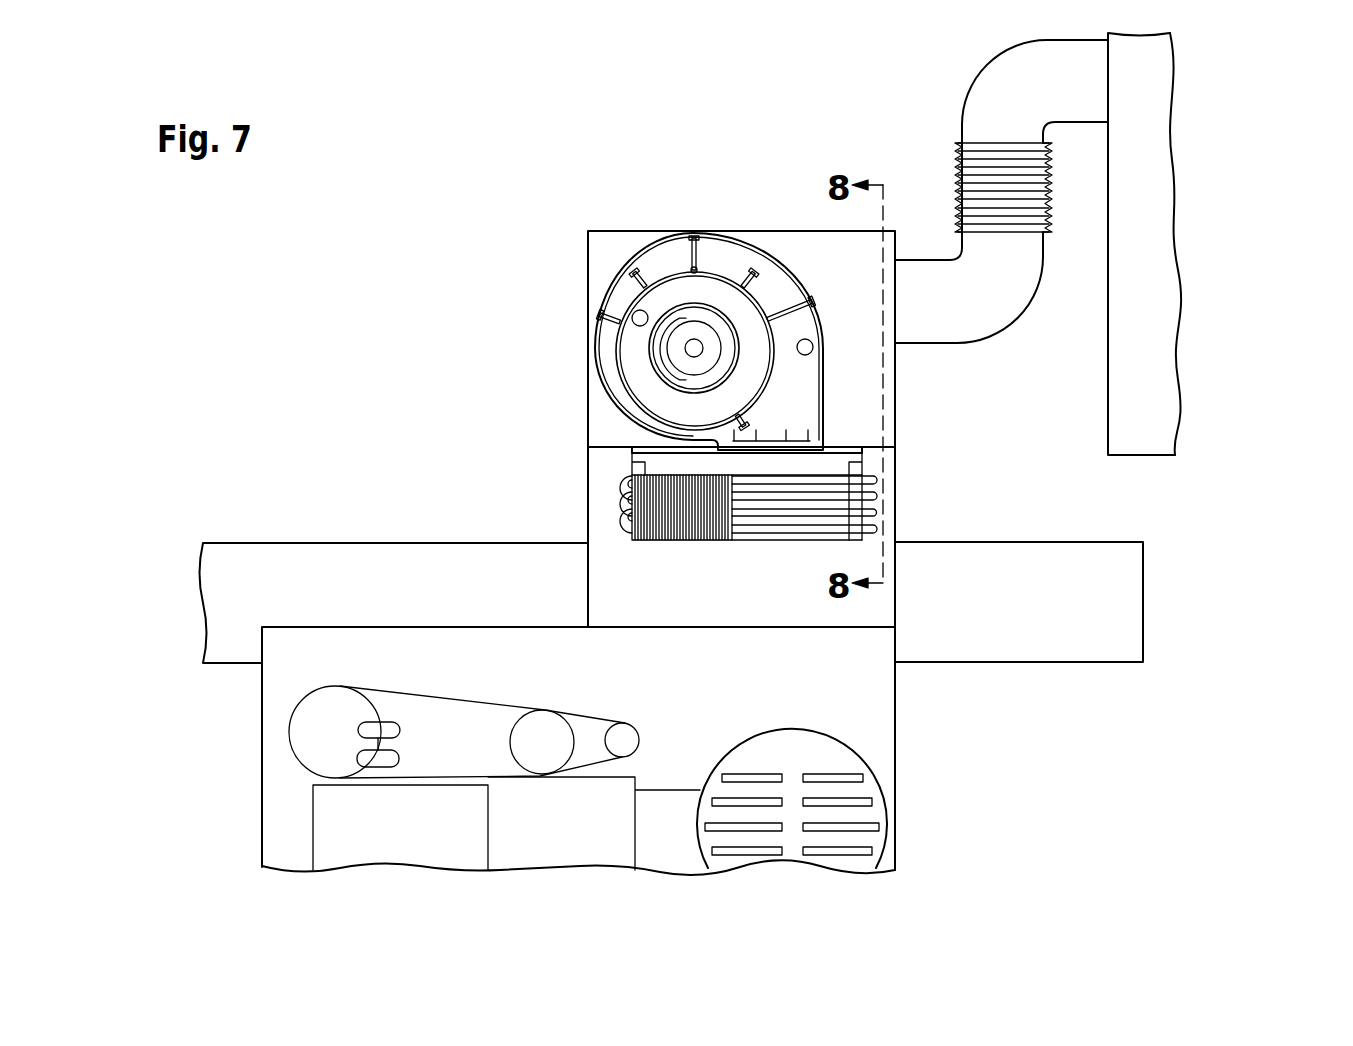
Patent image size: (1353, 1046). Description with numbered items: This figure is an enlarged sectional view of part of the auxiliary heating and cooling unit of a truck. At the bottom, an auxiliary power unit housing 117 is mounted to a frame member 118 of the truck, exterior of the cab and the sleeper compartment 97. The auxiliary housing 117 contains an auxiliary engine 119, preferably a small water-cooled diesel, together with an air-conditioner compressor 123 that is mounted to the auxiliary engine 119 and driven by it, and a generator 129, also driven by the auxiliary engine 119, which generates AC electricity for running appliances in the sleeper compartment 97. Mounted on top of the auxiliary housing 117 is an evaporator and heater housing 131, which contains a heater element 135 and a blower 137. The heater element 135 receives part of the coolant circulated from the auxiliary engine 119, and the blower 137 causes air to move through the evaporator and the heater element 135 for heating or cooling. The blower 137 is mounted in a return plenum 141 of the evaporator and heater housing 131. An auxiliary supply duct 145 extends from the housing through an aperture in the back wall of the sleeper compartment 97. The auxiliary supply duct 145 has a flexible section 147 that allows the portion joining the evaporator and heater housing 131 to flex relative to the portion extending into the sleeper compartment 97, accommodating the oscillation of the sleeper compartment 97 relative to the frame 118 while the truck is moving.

The sleeper compartment 97 is at (1122, 377).
The auxiliary power unit housing 117 is at (895, 778).
The frame member 118 is at (1143, 593).
The auxiliary engine 119 is at (330, 818).
The air-conditioner compressor 123 is at (305, 730).
The generator 129 is at (835, 753).
The evaporator and heater housing 131 is at (588, 258).
The heater element 135 is at (643, 497).
The blower 137 is at (635, 366).
The return plenum 141 is at (858, 279).
The auxiliary supply duct 145 is at (1000, 72).
The flexible section 147 is at (955, 158).